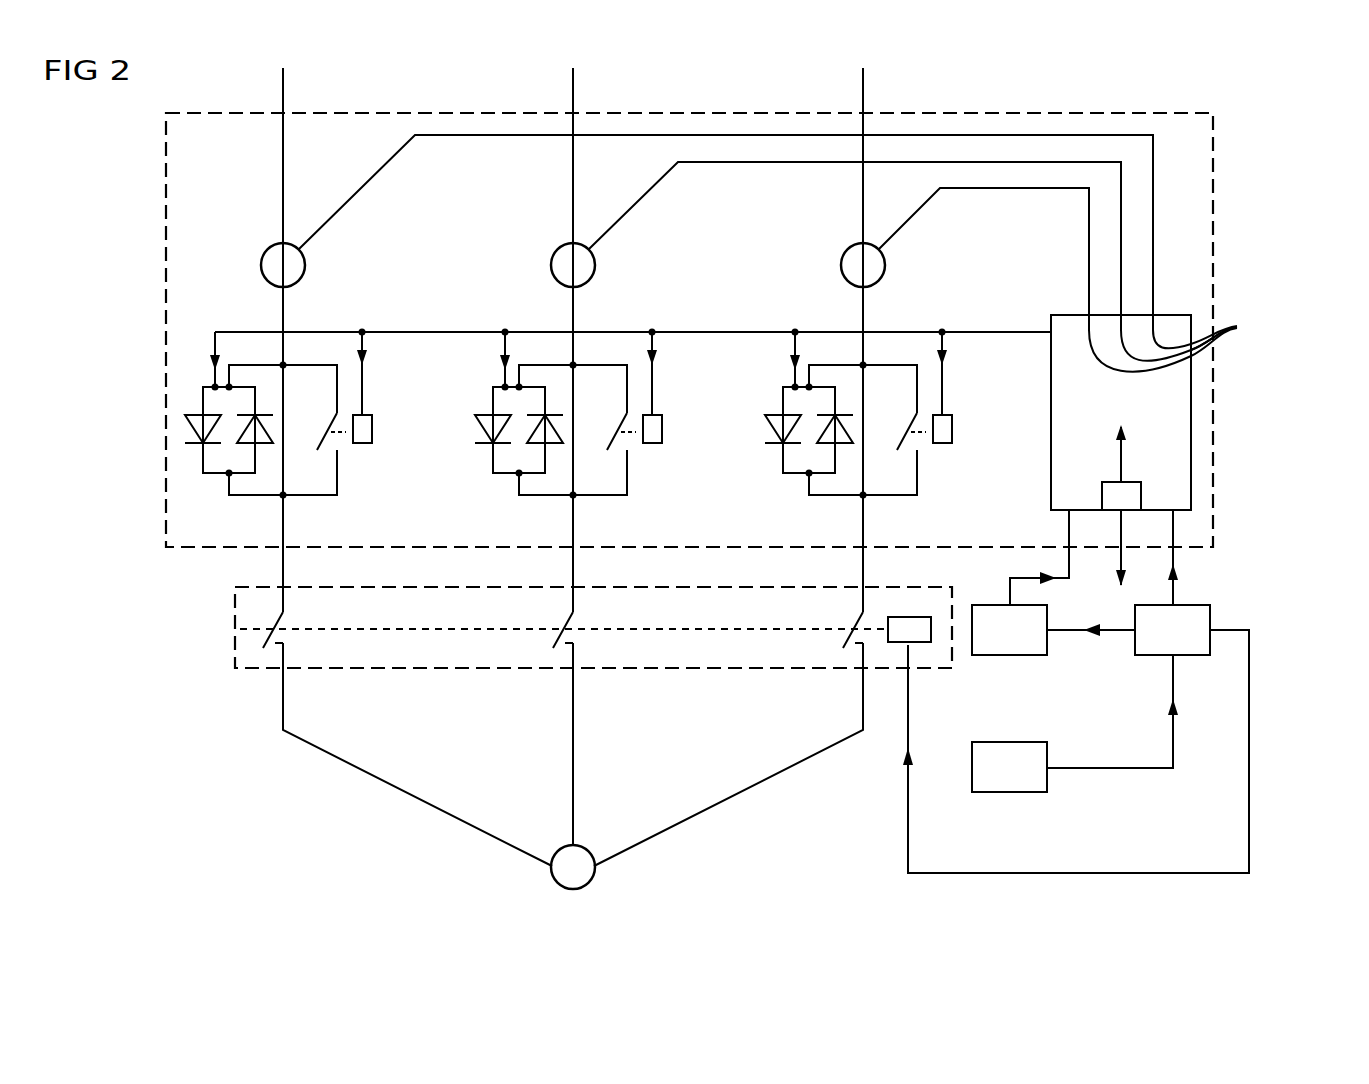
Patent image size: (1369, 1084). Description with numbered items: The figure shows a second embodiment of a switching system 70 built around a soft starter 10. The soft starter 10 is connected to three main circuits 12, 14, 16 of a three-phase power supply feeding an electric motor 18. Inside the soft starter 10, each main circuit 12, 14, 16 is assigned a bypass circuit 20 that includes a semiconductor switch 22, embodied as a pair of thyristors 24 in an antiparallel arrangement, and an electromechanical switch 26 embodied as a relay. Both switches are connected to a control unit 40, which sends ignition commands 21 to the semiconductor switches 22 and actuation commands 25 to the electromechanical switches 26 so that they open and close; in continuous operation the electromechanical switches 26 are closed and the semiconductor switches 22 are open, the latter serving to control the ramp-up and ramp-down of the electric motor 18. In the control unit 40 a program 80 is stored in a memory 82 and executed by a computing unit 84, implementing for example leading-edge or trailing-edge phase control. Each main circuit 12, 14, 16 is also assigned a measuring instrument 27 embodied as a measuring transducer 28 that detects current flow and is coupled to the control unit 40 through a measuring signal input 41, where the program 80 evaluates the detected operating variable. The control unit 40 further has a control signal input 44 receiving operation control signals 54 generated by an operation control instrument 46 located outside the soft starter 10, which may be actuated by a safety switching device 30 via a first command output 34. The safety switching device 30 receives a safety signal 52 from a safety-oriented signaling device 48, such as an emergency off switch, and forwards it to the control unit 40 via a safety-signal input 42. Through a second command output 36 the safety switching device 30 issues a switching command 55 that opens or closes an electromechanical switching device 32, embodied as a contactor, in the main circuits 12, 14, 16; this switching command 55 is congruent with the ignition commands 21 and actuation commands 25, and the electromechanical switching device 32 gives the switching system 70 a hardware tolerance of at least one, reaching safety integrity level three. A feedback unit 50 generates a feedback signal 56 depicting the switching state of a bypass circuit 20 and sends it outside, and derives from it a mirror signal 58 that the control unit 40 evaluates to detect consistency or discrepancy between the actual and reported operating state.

The soft starter 10 is at (481, 110).
The main circuit 12 is at (285, 85).
The main circuit 14 is at (575, 85).
The main circuit 16 is at (865, 85).
The electric motor 18 is at (573, 890).
The bypass circuit 20 is at (252, 363).
The ignition command 21 is at (208, 360).
The semiconductor switch 22 is at (200, 400).
The thyristor 24 is at (188, 430).
The actuation command 25 is at (363, 387).
The electromechanical switch 26 is at (332, 432).
The measuring instrument 27 is at (260, 262).
The measuring transducer 28 is at (550, 262).
The safety switching device 30 is at (1190, 658).
The electromechanical switching device 32 is at (237, 625).
The first command output 34 is at (1128, 635).
The second command output 36 is at (1212, 620).
The control unit 40 is at (1195, 408).
The measuring signal input 41 is at (1233, 332).
The safety-signal input 42 is at (1178, 520).
The control signal input 44 is at (1062, 522).
The operation control instrument 46 is at (1010, 655).
The safety-oriented signaling device 48 is at (1010, 795).
The feedback unit 50 is at (1130, 495).
The safety signal 52 is at (1178, 592).
The operation control signal 54 is at (1020, 575).
The switching command 55 is at (1068, 875).
The feedback signal 56 is at (1105, 545).
The mirror signal 58 is at (1115, 462).
The switching system 70 is at (135, 178).
The program 80 is at (1165, 460).
The memory 82 is at (1179, 338).
The computing unit 84 is at (1195, 331).